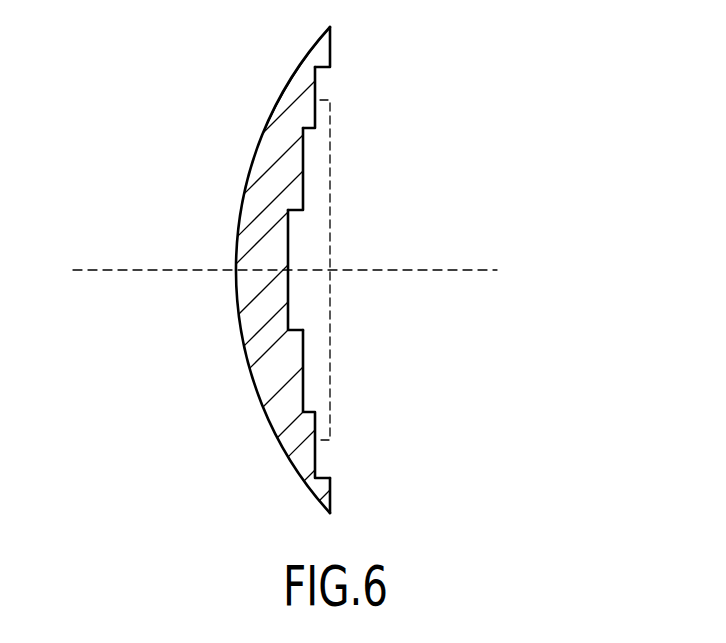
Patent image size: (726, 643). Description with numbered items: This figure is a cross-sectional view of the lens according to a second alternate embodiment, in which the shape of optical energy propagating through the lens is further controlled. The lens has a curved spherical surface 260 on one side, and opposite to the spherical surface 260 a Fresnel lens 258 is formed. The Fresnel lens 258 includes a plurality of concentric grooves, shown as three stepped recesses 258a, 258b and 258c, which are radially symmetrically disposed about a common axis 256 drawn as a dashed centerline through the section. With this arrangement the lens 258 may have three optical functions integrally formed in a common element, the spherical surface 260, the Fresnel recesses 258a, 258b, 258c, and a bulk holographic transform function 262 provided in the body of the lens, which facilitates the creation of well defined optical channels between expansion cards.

The common axis 256 is at (102, 270).
The Fresnel lens 258 is at (572, 55).
The recess 258a is at (332, 123).
The recess 258b is at (332, 208).
The recess 258c is at (332, 300).
The spherical surface 260 is at (292, 270).
The bulk holographic transform function 262 is at (283, 378).